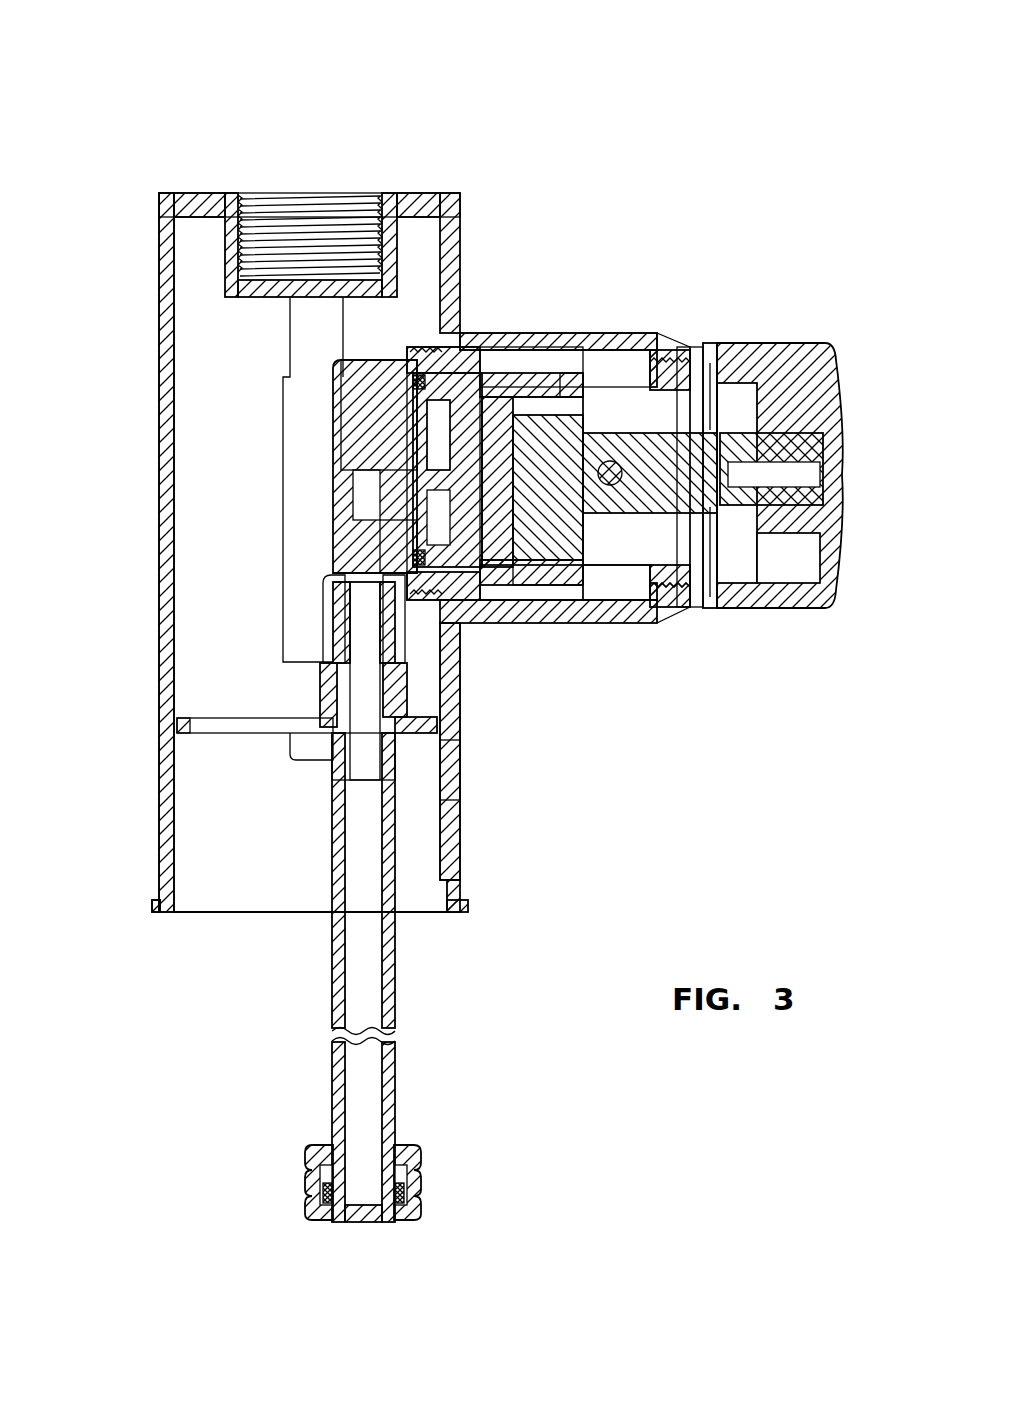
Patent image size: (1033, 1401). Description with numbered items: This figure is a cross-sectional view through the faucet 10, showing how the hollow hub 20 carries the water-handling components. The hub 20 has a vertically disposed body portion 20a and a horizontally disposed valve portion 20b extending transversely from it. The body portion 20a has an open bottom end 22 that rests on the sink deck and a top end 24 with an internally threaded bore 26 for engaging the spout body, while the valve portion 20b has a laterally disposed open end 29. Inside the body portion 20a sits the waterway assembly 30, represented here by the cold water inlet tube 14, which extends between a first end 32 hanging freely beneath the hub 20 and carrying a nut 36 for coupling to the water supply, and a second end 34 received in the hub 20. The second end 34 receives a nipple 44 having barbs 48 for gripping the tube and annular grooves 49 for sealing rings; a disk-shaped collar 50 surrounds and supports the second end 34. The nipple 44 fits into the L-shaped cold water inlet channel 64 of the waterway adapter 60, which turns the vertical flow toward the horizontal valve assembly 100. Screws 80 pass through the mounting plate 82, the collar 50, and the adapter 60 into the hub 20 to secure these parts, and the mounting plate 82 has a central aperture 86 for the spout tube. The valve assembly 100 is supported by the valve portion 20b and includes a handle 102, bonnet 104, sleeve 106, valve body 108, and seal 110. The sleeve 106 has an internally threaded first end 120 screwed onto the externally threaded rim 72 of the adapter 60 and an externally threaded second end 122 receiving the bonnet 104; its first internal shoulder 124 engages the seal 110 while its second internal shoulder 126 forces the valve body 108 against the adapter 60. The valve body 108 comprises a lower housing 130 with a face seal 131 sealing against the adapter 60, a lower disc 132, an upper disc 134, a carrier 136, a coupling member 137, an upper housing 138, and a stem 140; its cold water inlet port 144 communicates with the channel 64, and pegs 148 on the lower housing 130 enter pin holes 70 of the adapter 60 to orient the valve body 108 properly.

The faucet 10 is at (745, 110).
The cold water inlet tube 14 is at (332, 1068).
The hub 20 is at (166, 582).
The body portion 20a is at (165, 318).
The valve portion 20b is at (492, 345).
The open bottom end 22 is at (160, 913).
The top end 24 is at (190, 192).
The internally threaded bore 26 is at (272, 198).
The open end 29 is at (660, 612).
The waterway assembly 30 is at (440, 860).
The first end 32 is at (316, 1262).
The second end 34 is at (302, 583).
The nut 36 is at (420, 1178).
The nipple 44 is at (462, 692).
The barbs 48 is at (334, 740).
The annular grooves 49 is at (325, 638).
The collar 50 is at (445, 719).
The waterway adapter 60 is at (318, 511).
The cold water inlet channel 64 is at (368, 487).
The pin holes 70 is at (425, 538).
The externally threaded rim 72 is at (345, 612).
The screws 80 is at (302, 749).
The mounting plate 82 is at (460, 768).
The central aperture 86 is at (205, 708).
The valve assembly 100 is at (618, 436).
The handle 102 is at (800, 343).
The bonnet 104 is at (686, 408).
The sleeve 106 is at (628, 345).
The valve body 108 is at (522, 380).
The seal 110 is at (498, 380).
The internally threaded first end 120 is at (423, 322).
The externally threaded second end 122 is at (692, 612).
The first internal shoulder 124 is at (458, 335).
The second internal shoulder 126 is at (573, 372).
The lower housing 130 is at (412, 346).
The face seal 131 is at (418, 385).
The lower disc 132 is at (543, 600).
The upper disc 134 is at (583, 600).
The carrier 136 is at (630, 623).
The coupling member 137 is at (668, 527).
The upper housing 138 is at (753, 343).
The stem 140 is at (710, 453).
The cold water inlet port 144 is at (408, 428).
The pegs 148 is at (473, 623).